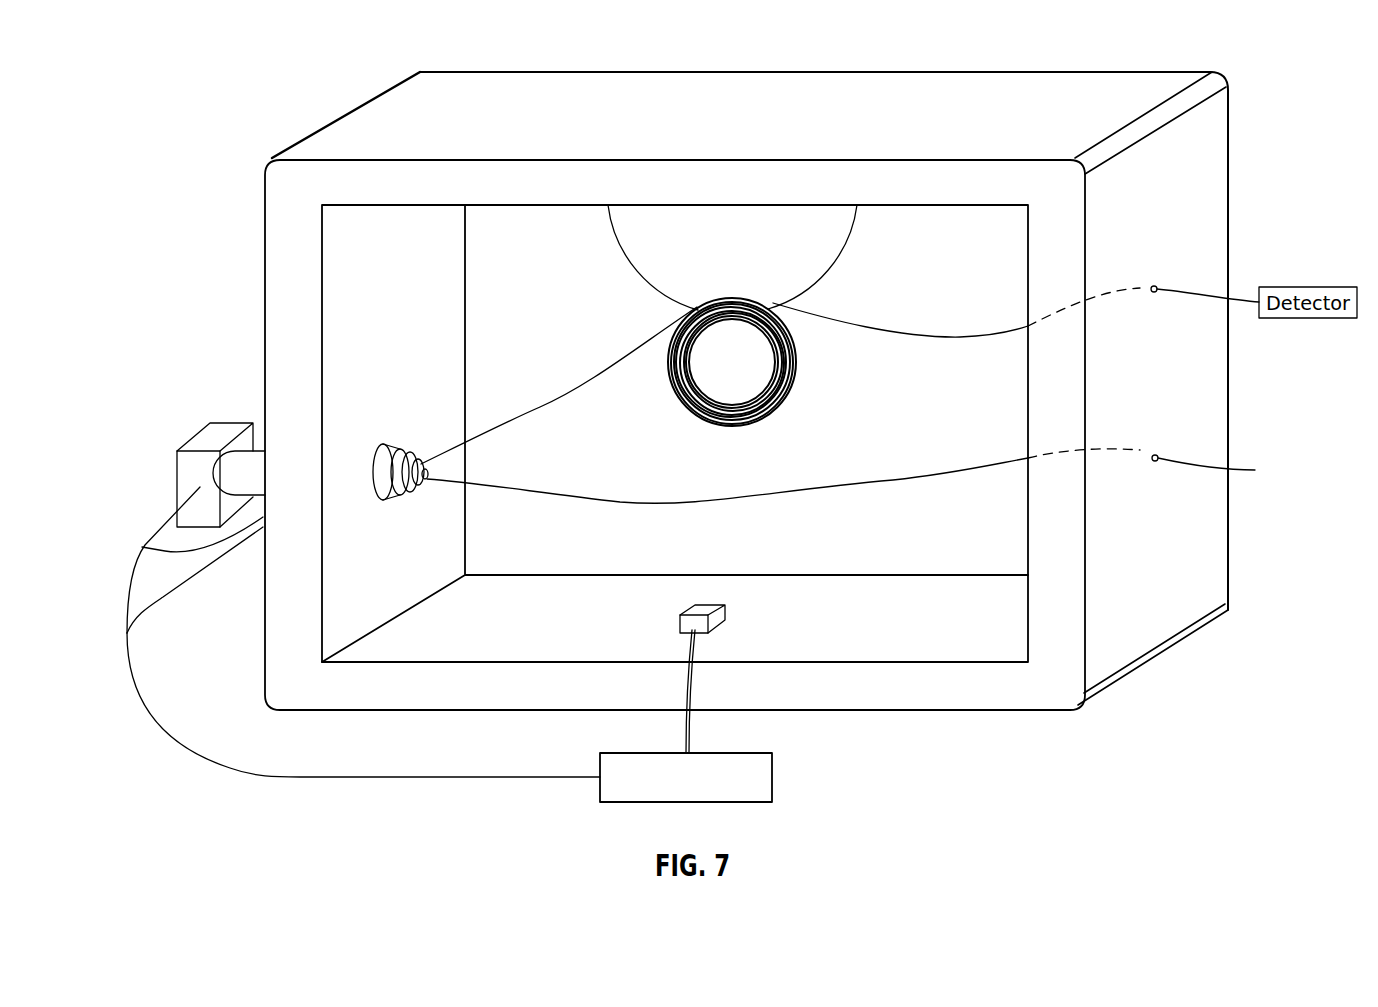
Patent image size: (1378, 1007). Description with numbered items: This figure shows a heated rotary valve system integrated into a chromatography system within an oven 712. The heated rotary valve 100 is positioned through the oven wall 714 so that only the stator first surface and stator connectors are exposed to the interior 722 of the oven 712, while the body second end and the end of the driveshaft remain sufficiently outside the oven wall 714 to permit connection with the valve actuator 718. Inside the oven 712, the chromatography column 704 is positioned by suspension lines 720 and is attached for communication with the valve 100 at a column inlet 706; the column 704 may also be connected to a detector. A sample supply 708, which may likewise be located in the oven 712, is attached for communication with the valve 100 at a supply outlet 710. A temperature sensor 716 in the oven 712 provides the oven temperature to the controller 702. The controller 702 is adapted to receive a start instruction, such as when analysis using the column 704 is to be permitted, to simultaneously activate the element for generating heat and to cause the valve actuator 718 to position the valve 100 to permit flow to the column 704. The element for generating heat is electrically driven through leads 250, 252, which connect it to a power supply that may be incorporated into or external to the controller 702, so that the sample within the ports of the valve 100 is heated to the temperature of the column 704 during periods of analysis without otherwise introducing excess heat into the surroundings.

The heated rotary valve 100 is at (397, 505).
The lead 250 is at (190, 553).
The lead 252 is at (160, 607).
The controller 702 is at (773, 778).
The chromatography column 704 is at (797, 367).
The column inlet 706 is at (460, 435).
The sample supply 708 is at (1213, 470).
The supply outlet 710 is at (603, 505).
The oven 712 is at (1015, 700).
The oven wall 714 is at (285, 245).
The temperature sensor 716 is at (723, 618).
The valve actuator 718 is at (225, 430).
The suspension lines 720 is at (623, 247).
The interior 722 is at (483, 235).